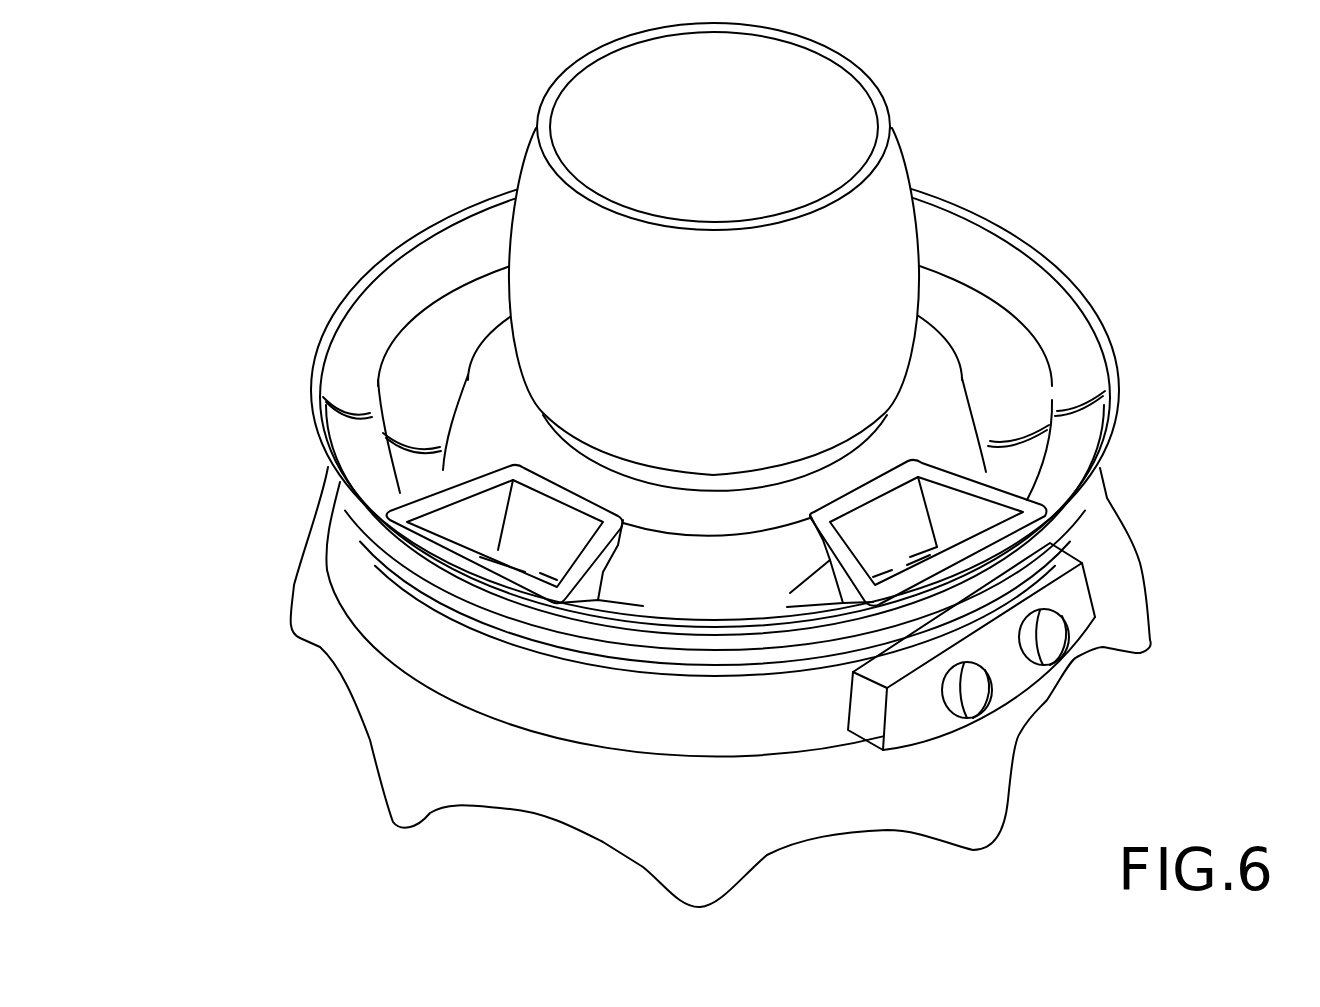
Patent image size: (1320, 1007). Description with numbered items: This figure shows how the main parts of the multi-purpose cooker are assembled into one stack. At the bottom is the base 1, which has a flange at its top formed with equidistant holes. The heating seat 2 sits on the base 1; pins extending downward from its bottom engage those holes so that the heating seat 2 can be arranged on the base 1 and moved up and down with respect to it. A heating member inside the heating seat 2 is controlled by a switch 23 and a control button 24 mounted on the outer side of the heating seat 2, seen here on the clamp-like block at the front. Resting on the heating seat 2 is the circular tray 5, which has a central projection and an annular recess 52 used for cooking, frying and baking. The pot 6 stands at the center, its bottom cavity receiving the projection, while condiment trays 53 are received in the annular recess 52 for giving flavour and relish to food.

The base 1 is at (1120, 560).
The heating seat 2 is at (1098, 527).
The circular tray 5 is at (987, 220).
The pot 6 is at (638, 112).
The switch 23 is at (1067, 627).
The control button 24 is at (987, 717).
The annular recess 52 is at (430, 377).
The condiment tray 53 is at (505, 472).